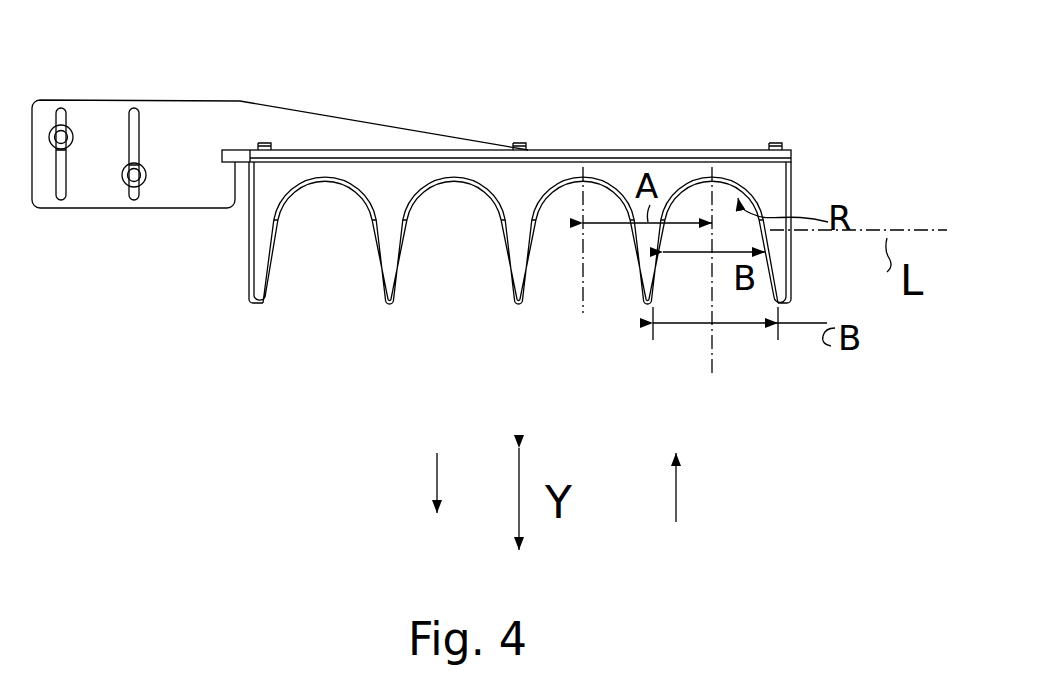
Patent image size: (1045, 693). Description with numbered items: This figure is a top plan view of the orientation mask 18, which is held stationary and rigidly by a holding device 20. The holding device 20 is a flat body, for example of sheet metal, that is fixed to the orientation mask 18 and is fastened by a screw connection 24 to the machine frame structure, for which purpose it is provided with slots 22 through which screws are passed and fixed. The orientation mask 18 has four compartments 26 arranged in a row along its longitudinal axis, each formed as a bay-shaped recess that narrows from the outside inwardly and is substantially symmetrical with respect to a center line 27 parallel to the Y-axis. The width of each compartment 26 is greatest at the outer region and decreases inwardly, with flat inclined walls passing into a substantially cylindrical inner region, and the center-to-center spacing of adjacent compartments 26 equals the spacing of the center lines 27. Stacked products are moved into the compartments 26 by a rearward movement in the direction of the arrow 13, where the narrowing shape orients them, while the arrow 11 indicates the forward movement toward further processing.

The arrow 11 is at (437, 482).
The arrow 13 is at (676, 497).
The orientation mask 18 is at (785, 462).
The holding device 20 is at (175, 123).
The slots 22 is at (62, 162).
The screw connection 24 is at (66, 125).
The compartments 26 is at (327, 277).
The center line 27 is at (582, 315).